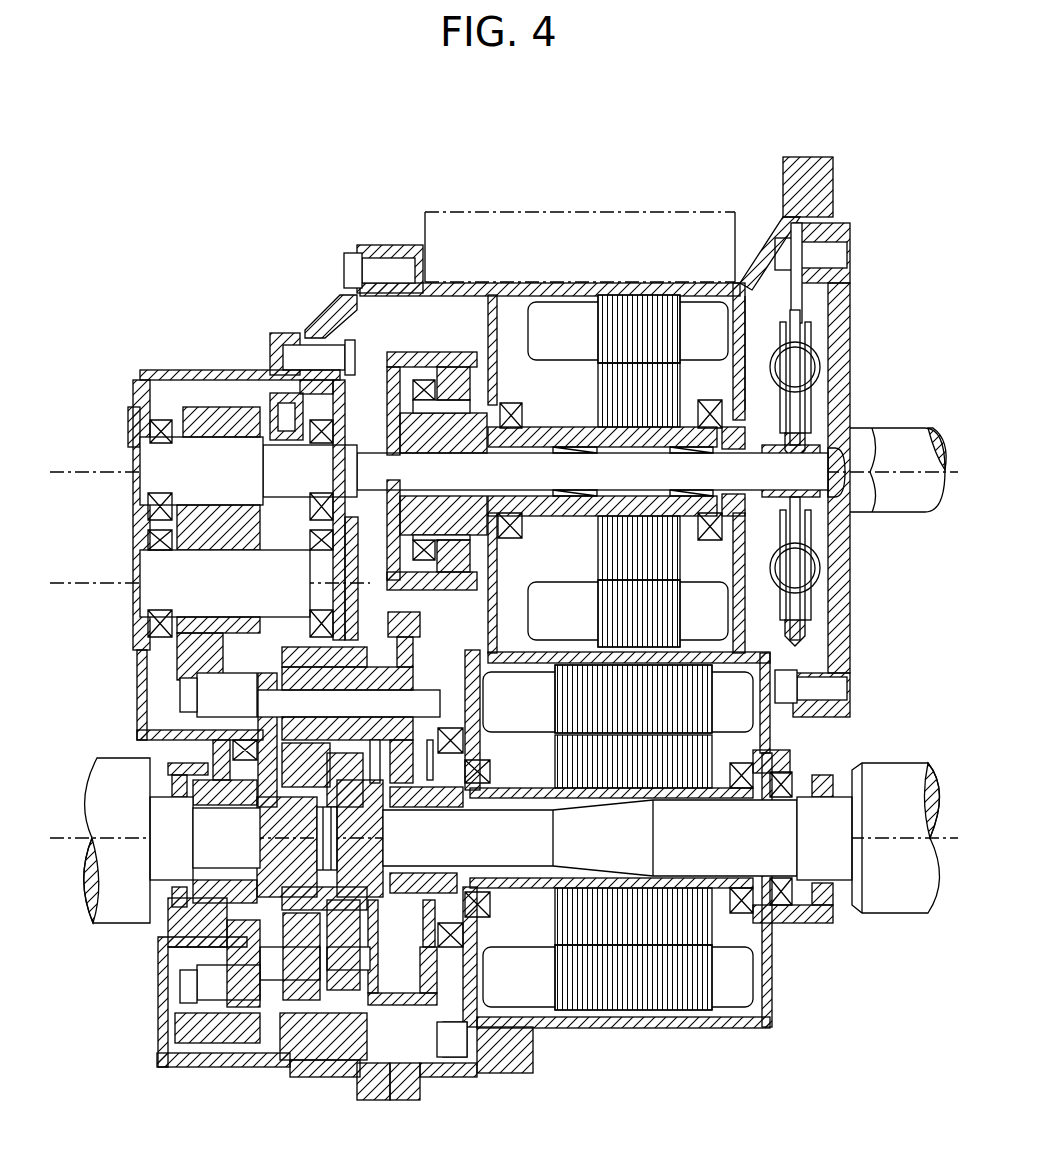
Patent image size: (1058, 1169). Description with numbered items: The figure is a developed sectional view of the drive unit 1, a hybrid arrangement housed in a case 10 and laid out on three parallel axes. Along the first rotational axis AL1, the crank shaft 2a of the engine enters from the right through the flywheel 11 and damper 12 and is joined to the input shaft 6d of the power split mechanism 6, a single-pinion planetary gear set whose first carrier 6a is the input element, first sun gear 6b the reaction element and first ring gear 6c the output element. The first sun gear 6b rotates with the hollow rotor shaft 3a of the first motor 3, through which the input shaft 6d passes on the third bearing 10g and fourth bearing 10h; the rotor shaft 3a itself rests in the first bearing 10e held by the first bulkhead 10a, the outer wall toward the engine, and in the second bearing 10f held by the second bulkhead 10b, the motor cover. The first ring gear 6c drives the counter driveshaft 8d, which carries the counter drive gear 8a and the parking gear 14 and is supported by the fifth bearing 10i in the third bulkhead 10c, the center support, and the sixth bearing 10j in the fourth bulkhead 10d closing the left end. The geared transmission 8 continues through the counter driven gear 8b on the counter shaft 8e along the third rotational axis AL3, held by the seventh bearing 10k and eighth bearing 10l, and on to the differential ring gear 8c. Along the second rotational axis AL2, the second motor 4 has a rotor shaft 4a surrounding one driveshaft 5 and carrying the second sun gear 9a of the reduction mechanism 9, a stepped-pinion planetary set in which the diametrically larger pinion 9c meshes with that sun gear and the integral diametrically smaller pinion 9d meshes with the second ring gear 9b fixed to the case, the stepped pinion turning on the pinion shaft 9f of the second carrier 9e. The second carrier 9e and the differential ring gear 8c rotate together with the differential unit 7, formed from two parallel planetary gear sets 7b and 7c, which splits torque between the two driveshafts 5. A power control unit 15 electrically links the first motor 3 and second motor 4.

The drive unit 1 is at (133, 233).
The crank shaft 2a is at (913, 430).
The first motor 3 is at (522, 302).
The rotor shaft 3a is at (562, 507).
The second motor 4 is at (740, 935).
The rotor shaft 4a is at (523, 795).
The driveshaft 5 is at (118, 917).
The power split mechanism 6 is at (383, 333).
The first carrier 6a is at (422, 380).
The first sun gear 6b is at (453, 500).
The first ring gear 6c is at (473, 352).
The input shaft 6d is at (637, 483).
The differential unit 7 is at (348, 1118).
The planetary gear set 7b is at (302, 1007).
The planetary gear set 7c is at (348, 995).
The geared transmission 8 is at (178, 385).
The counter drive gear 8a is at (214, 415).
The counter driven gear 8b is at (190, 540).
The differential ring gear 8c is at (183, 647).
The counter driveshaft 8d is at (234, 470).
The counter shaft 8e is at (261, 582).
The reduction mechanism 9 is at (420, 1035).
The second sun gear 9a is at (412, 893).
The second ring gear 9b is at (367, 1023).
The diametrically larger pinion 9c is at (408, 618).
The diametrically smaller pinion 9d is at (410, 653).
The second carrier 9e is at (430, 977).
The pinion shaft 9f is at (270, 708).
The case 10 is at (637, 1025).
The first bulkhead 10a is at (738, 308).
The second bulkhead 10b is at (492, 372).
The third bulkhead 10c is at (322, 412).
The fourth bulkhead 10d is at (128, 447).
The first bearing 10e is at (737, 525).
The second bearing 10f is at (527, 520).
The third bearing 10g is at (723, 413).
The fourth bearing 10h is at (562, 443).
The fifth bearing 10i is at (300, 393).
The sixth bearing 10j is at (153, 503).
The seventh bearing 10k is at (317, 622).
The eighth bearing 10l is at (150, 627).
The flywheel 11 is at (842, 348).
The damper 12 is at (810, 623).
The parking gear 14 is at (258, 385).
The power control unit 15 is at (673, 240).
The first rotational axis AL1 is at (67, 467).
The second rotational axis AL2 is at (68, 783).
The third rotational axis AL3 is at (72, 582).